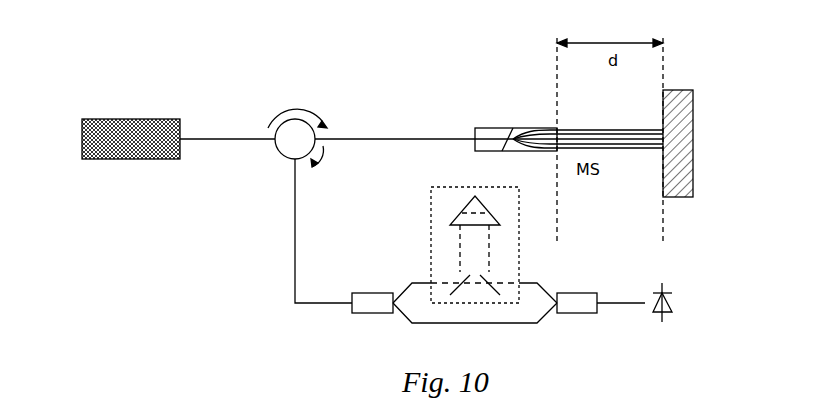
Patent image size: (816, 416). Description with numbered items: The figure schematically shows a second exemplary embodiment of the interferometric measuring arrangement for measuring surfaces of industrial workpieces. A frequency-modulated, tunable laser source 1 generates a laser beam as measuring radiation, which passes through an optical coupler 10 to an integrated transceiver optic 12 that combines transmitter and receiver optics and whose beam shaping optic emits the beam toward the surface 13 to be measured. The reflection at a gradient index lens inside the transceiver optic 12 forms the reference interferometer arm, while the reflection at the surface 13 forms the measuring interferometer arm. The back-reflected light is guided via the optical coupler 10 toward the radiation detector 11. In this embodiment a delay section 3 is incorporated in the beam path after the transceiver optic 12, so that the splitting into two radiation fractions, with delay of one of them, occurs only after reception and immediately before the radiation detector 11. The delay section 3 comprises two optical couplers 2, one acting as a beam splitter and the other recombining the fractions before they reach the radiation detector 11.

The frequency-modulated laser source 1 is at (95, 140).
The optical coupler 10 is at (298, 132).
The transceiver optic 12 is at (493, 132).
The surface 13 is at (680, 193).
The delay section 3 is at (430, 232).
The optical coupler 2 is at (372, 303).
The radiation detector 11 is at (658, 307).